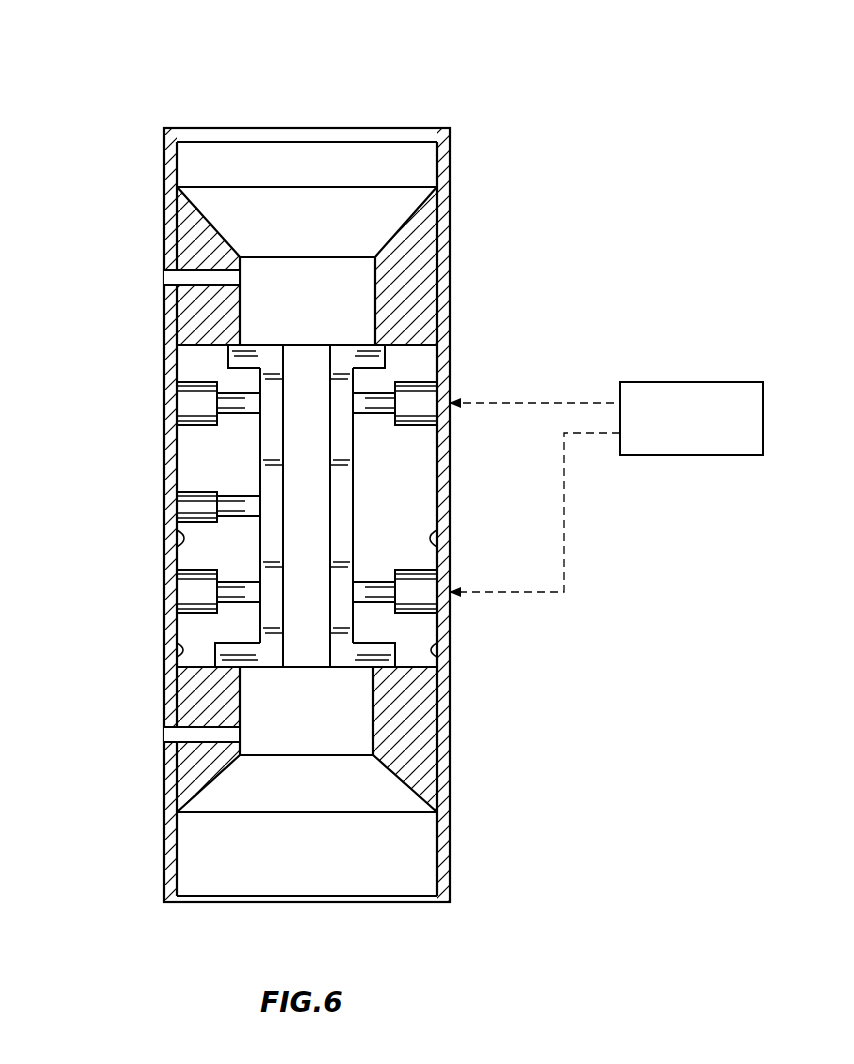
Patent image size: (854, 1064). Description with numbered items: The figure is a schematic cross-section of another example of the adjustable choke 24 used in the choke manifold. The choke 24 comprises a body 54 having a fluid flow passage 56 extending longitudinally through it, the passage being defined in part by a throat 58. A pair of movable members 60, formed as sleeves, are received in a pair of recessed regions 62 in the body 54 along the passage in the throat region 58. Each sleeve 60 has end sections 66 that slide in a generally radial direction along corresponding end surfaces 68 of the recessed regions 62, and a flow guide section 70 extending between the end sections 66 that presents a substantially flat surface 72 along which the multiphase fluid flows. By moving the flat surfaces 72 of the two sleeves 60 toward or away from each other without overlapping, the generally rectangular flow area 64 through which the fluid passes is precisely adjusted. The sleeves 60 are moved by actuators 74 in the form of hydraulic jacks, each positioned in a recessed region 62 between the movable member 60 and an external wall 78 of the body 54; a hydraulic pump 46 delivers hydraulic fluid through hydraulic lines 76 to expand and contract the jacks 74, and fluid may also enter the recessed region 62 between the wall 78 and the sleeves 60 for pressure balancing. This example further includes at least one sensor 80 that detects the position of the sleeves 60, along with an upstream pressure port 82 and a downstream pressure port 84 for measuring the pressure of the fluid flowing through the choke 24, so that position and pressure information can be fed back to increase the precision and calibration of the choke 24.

The adjustable choke 24 is at (506, 99).
The hydraulic pump 46 is at (672, 372).
The body 54 is at (452, 758).
The fluid flow passage 56 is at (332, 877).
The throat 58 is at (250, 749).
The movable members 60 is at (278, 673).
The recessed regions 62 is at (180, 648).
The flow area 64 is at (307, 376).
The end sections 66 is at (266, 345).
The end surfaces 68 is at (192, 350).
The flow guide section 70 is at (260, 557).
The flat surface 72 is at (332, 512).
The actuators 74 is at (191, 429).
The hydraulic lines 76 is at (530, 403).
The external wall 78 is at (188, 538).
The sensor 80 is at (205, 486).
The upstream pressure port 82 is at (176, 278).
The downstream pressure port 84 is at (176, 740).